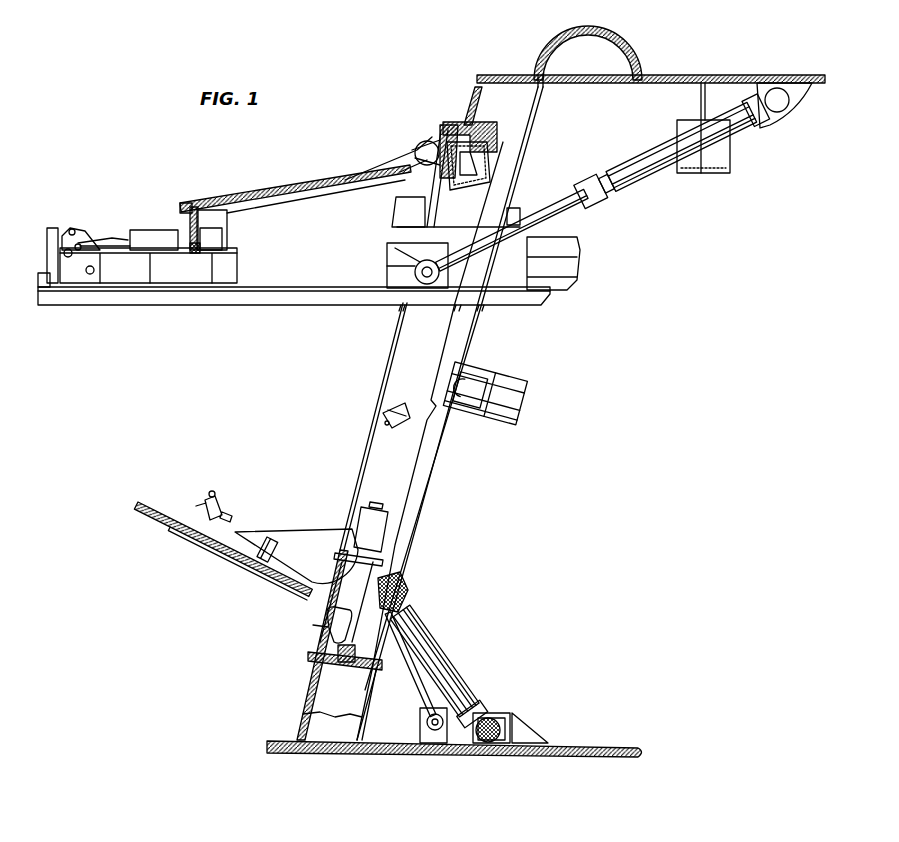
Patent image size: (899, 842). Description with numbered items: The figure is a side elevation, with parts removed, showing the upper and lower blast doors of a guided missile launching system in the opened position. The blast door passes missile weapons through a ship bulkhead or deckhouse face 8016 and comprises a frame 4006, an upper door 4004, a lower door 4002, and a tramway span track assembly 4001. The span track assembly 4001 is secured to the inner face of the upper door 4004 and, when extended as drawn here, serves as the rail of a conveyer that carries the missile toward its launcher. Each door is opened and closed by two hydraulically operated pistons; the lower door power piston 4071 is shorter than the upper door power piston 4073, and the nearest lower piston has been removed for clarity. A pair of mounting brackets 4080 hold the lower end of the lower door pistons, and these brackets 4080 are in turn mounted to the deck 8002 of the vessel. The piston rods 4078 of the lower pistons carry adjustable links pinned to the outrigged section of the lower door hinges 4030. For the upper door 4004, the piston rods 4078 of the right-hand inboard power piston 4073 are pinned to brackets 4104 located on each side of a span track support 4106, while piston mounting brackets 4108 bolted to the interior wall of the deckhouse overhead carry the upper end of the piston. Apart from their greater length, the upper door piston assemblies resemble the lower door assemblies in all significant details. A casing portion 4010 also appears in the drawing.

The tramway span track assembly 4001 is at (163, 305).
The span track support 4106 is at (285, 277).
The upper door 4004 is at (260, 192).
The brackets 4104 is at (385, 257).
The piston rods 4078 is at (550, 220).
The right-hand inboard power piston 4073 is at (647, 177).
The piston mounting brackets 4108 is at (803, 100).
The frame 4006 is at (403, 353).
The lower door hinge 4030 is at (313, 537).
The lower door 4002 is at (200, 543).
The casing 4010 is at (383, 562).
The ship bulkhead or deckhouse face 8016 is at (298, 703).
The lower door power piston 4071 is at (413, 687).
The mounting brackets 4080 is at (455, 733).
The deck 8002 is at (598, 725).